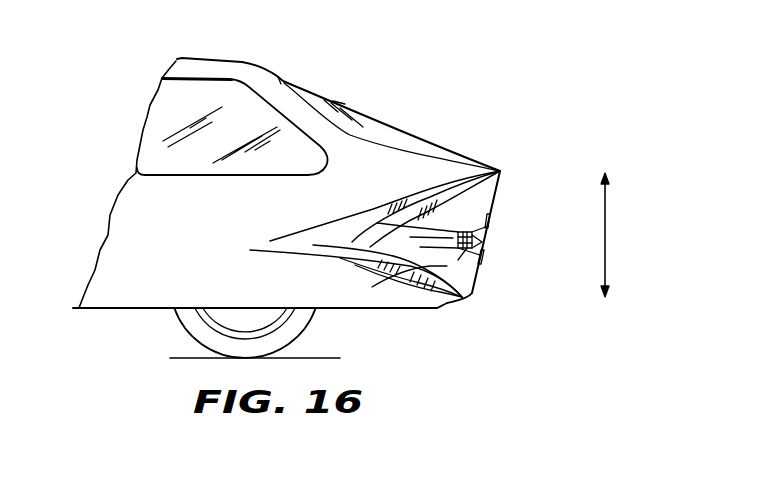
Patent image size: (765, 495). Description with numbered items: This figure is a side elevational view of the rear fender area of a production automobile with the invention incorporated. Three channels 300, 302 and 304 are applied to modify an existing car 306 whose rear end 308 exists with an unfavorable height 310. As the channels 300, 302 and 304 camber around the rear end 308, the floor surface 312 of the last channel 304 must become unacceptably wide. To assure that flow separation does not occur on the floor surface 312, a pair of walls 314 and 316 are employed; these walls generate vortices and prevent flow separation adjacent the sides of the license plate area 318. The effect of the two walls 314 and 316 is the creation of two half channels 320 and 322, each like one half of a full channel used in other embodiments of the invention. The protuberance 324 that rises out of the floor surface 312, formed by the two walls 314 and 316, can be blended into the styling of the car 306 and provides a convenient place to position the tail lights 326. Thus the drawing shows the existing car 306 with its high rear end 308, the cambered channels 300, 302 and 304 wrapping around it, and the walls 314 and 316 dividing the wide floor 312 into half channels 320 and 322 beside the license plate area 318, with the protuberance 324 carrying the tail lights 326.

The channel 300 is at (268, 243).
The channel 302 is at (352, 242).
The last channel 304 is at (440, 223).
The existing car 306 is at (243, 62).
The rear end 308 is at (479, 201).
The unfavorable height 310 is at (607, 248).
The floor surface 312 is at (400, 280).
The wall 314 is at (470, 293).
The wall 316 is at (480, 223).
The license plate area 318 is at (483, 260).
The half channel 320 is at (440, 305).
The half channel 322 is at (497, 212).
The protuberance 324 is at (353, 250).
The tail lights 326 is at (478, 273).